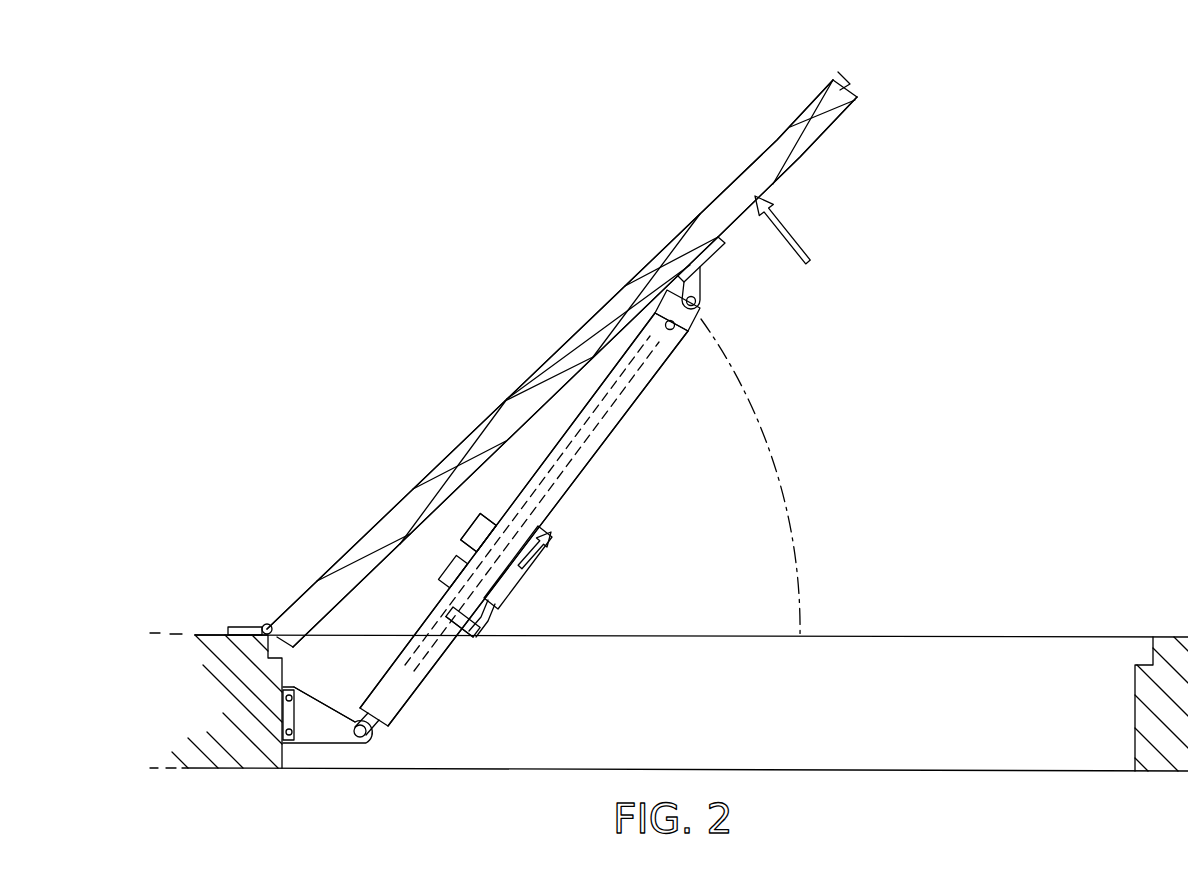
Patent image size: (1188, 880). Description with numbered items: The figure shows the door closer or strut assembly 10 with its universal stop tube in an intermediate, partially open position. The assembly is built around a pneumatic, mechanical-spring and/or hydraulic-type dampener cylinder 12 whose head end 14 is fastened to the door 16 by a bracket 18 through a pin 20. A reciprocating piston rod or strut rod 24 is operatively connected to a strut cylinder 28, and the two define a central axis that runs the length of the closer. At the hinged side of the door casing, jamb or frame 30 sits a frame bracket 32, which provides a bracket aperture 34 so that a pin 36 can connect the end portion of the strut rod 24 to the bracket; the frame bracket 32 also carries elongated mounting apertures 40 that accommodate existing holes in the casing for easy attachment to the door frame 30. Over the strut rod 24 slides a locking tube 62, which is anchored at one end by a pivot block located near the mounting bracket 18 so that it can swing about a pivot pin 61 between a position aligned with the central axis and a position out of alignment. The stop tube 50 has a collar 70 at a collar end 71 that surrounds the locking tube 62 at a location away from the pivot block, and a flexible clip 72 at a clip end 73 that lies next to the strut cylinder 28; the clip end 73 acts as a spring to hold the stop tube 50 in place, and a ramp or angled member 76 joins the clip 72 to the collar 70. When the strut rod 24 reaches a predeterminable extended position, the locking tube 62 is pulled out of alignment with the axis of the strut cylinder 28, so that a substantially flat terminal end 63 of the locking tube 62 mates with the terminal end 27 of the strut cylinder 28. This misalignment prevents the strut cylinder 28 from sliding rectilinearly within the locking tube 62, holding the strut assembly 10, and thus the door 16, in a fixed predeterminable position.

The strut assembly 10 is at (484, 135).
The dampener cylinder 12 is at (606, 466).
The head end 14 is at (714, 290).
The door 16 is at (772, 160).
The bracket 18 is at (701, 262).
The pin 20 is at (700, 303).
The strut rod 24 is at (665, 290).
The terminal end of strut cylinder 27 is at (561, 544).
The strut cylinder 28 is at (425, 625).
The door frame 30 is at (188, 652).
The frame bracket 32 is at (315, 728).
The bracket aperture 34 is at (365, 717).
The pin 36 is at (368, 735).
The mounting apertures 40 is at (300, 716).
The stop tube 50 is at (464, 540).
The pivot pin 61 is at (673, 333).
The locking tube 62 is at (567, 433).
The terminal end of locking tube 63 is at (470, 590).
The collar 70 is at (510, 582).
The collar end 71 is at (484, 526).
The flexible clip 72 is at (483, 637).
The clip end 73 is at (459, 647).
The ramp or angled member 76 is at (492, 607).